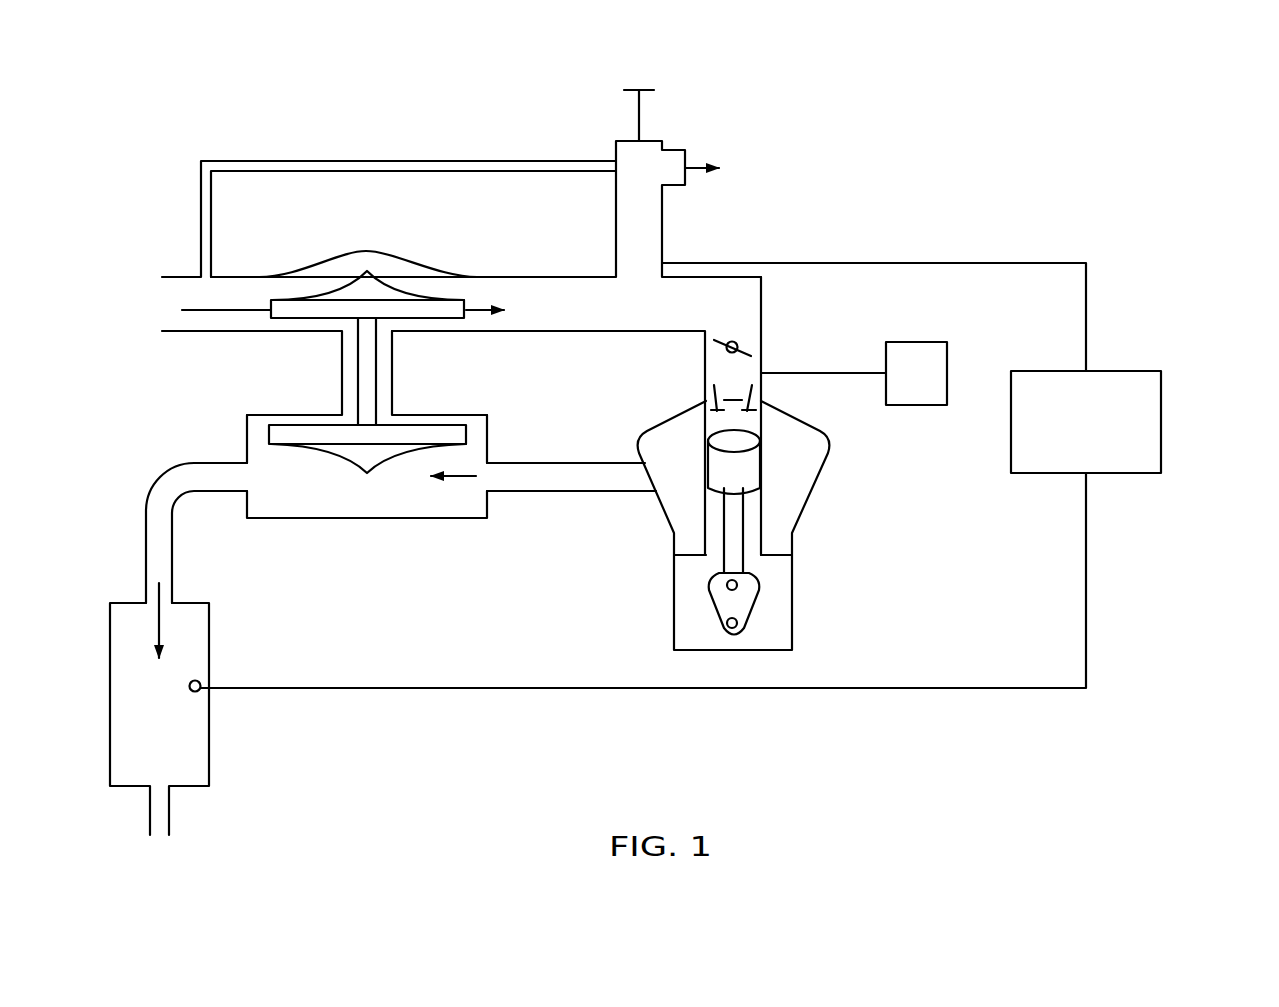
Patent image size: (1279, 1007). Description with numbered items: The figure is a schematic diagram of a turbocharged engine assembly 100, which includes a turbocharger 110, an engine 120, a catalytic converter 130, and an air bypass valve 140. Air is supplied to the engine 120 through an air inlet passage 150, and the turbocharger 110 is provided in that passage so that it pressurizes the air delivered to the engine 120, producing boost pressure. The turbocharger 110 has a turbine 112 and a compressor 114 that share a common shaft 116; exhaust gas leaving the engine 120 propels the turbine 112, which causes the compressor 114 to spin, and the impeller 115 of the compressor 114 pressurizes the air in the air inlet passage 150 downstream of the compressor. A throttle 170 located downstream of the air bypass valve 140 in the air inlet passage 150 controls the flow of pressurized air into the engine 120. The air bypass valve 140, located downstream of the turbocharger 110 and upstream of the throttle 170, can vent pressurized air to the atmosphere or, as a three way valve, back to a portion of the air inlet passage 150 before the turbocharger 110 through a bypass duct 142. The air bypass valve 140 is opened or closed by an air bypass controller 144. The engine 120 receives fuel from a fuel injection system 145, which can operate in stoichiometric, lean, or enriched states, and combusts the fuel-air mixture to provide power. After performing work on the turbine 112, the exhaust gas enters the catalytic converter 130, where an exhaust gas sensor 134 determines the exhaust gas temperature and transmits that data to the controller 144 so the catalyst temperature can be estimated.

The turbocharged engine assembly 100 is at (924, 226).
The turbocharger 110 is at (410, 258).
The turbine 112 is at (365, 466).
The compressor 114 is at (358, 262).
The impeller 115 is at (345, 290).
The common shaft 116 is at (357, 383).
The engine 120 is at (815, 490).
The catalytic converter 130 is at (210, 763).
The exhaust gas sensor 134 is at (202, 684).
The air bypass valve 140 is at (643, 120).
The bypass duct 142 is at (517, 160).
The air bypass controller 144 is at (1162, 408).
The fuel injection system 145 is at (930, 344).
The air inlet passage 150 is at (575, 300).
The throttle 170 is at (740, 345).